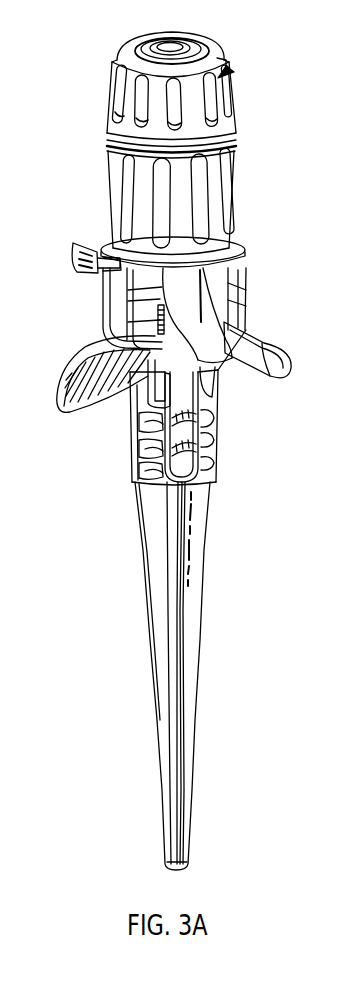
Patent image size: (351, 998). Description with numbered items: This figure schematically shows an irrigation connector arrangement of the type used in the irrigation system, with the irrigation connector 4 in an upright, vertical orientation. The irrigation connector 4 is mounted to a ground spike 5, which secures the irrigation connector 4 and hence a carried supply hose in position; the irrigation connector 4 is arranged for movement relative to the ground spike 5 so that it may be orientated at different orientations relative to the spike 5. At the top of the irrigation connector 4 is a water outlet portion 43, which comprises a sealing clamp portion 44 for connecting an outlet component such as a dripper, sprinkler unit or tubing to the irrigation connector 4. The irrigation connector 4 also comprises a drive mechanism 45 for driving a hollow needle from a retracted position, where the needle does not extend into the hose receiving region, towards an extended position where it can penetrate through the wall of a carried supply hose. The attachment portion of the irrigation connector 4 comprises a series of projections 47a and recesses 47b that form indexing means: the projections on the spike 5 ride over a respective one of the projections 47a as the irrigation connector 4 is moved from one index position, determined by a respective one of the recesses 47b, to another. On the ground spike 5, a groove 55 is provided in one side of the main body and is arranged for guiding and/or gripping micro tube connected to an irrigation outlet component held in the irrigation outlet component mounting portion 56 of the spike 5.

The irrigation connector 4 is at (176, 143).
The sealing clamp portion 44 is at (200, 46).
The water outlet portion 43 is at (228, 70).
The drive mechanism 45 is at (215, 180).
The projections 47a is at (140, 320).
The recesses 47b is at (160, 336).
The irrigation outlet component mounting portion 56 is at (157, 390).
The groove 55 is at (188, 438).
The ground spike 5 is at (160, 578).